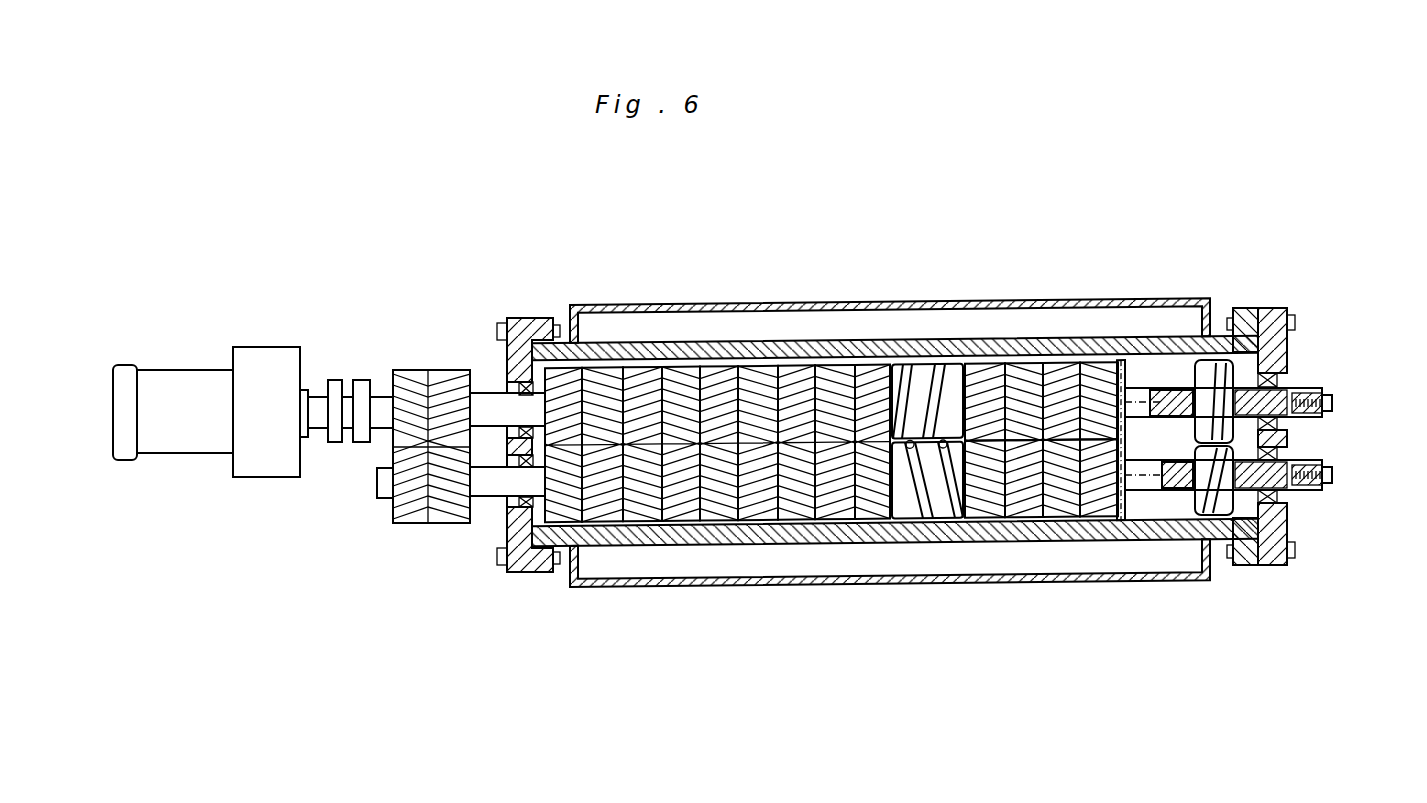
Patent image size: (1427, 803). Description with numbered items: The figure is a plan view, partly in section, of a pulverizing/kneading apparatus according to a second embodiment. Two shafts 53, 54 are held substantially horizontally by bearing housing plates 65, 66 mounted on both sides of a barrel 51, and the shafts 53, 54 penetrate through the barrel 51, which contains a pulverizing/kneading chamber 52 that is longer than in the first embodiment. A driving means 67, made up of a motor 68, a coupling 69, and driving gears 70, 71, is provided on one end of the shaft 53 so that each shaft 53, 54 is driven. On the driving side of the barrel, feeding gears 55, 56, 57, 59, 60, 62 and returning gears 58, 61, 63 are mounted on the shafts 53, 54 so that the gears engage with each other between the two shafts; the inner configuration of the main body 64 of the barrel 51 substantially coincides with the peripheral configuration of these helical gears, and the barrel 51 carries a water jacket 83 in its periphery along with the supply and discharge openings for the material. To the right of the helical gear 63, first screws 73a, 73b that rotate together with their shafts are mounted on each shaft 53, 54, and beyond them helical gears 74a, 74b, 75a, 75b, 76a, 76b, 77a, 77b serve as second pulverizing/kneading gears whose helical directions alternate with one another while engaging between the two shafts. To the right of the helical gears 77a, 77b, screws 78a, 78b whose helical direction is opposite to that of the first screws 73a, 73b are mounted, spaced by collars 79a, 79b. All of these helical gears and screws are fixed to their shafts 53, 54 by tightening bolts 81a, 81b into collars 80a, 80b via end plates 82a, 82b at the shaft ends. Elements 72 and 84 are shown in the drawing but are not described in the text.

The barrel 51 is at (660, 343).
The pulverizing/kneading chamber 52 is at (1173, 363).
The shaft 53 is at (1328, 382).
The shaft 54 is at (1328, 493).
The feeding gear 55 is at (510, 573).
The feeding gear 56 is at (567, 574).
The feeding gear 57 is at (633, 528).
The returning gear 58 is at (677, 528).
The feeding gear 59 is at (717, 528).
The feeding gear 60 is at (760, 528).
The returning gear 61 is at (800, 527).
The feeding gear 62 is at (823, 524).
The returning gear 63 is at (865, 523).
The main body 64 is at (723, 345).
The bearing housing plate 65 is at (519, 318).
The bearing housing plate 66 is at (1268, 307).
The driving means 67 is at (342, 336).
The motor 68 is at (208, 368).
The coupling 69 is at (355, 365).
The driving gear 70 is at (397, 526).
The driving gear 71 is at (450, 526).
The bearing sleeve 72 is at (1285, 398).
The first screw 73a is at (920, 362).
The first screw 73b is at (940, 518).
The helical gear 74a is at (972, 364).
The helical gear 74b is at (982, 518).
The helical gear 75a is at (1020, 364).
The helical gear 75b is at (1023, 518).
The helical gear 76a is at (1056, 364).
The helical gear 76b is at (1063, 518).
The helical gear 77a is at (1100, 364).
The helical gear 77b is at (1107, 518).
The screw 78a is at (1207, 383).
The screw 78b is at (1220, 500).
The collar 79a is at (1152, 388).
The collar 79b is at (1170, 495).
The collar 80a is at (1293, 387).
The collar 80b is at (1287, 510).
The bolt 81a is at (1333, 400).
The bolt 81b is at (1333, 474).
The end plate 82a is at (1325, 412).
The end plate 82b is at (1317, 490).
The water jacket 83 is at (780, 303).
The partition plate 84 is at (1152, 500).